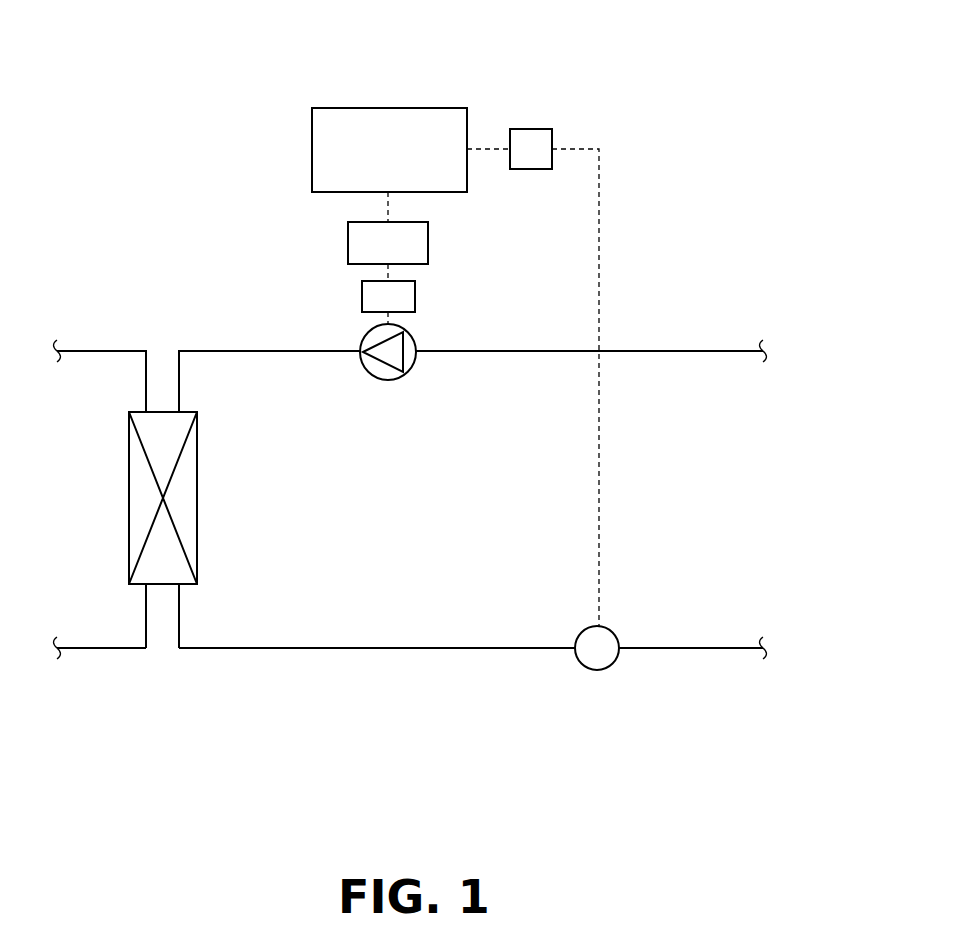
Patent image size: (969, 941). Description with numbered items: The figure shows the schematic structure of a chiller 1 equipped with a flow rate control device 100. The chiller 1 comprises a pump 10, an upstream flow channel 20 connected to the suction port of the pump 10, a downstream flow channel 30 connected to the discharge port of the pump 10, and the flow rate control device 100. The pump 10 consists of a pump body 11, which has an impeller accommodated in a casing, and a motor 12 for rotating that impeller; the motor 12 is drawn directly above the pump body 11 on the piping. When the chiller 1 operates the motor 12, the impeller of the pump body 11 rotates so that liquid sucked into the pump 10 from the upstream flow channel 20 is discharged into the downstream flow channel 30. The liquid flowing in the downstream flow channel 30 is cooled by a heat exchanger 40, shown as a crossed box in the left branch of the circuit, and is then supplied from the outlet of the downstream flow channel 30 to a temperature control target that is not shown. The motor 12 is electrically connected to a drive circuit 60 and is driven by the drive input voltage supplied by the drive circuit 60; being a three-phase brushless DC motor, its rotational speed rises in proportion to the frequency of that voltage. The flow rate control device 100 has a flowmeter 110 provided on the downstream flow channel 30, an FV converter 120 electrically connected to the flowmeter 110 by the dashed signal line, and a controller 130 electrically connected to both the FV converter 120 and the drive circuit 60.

The chiller 1 is at (650, 17).
The pump 10 is at (448, 330).
The pump body 11 is at (416, 341).
The motor 12 is at (415, 296).
The upstream flow channel 20 is at (673, 351).
The downstream flow channel 30 is at (220, 351).
The heat exchanger 40 is at (129, 447).
The drive circuit 60 is at (348, 242).
The flow rate control device 100 is at (332, 97).
The flowmeter 110 is at (618, 640).
The FV converter 120 is at (529, 129).
The controller 130 is at (431, 108).